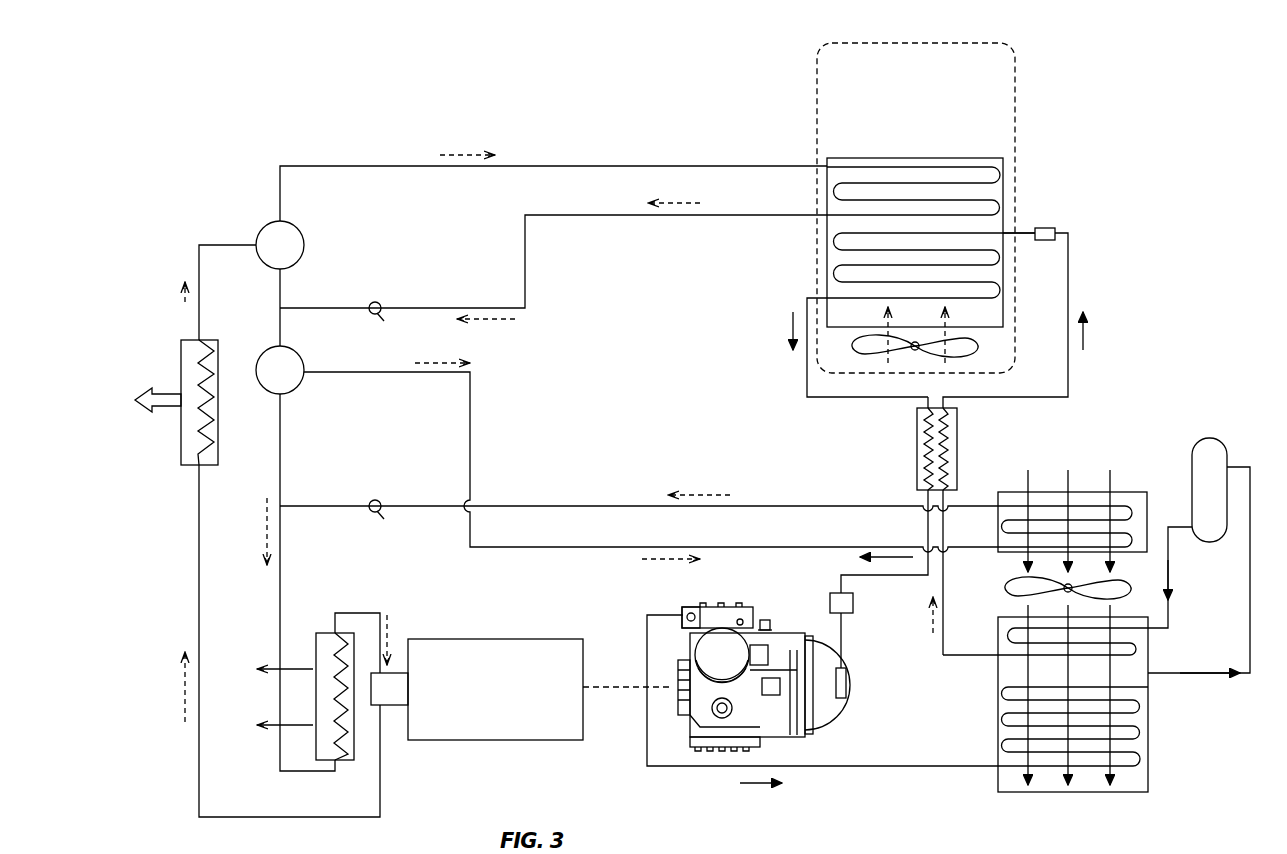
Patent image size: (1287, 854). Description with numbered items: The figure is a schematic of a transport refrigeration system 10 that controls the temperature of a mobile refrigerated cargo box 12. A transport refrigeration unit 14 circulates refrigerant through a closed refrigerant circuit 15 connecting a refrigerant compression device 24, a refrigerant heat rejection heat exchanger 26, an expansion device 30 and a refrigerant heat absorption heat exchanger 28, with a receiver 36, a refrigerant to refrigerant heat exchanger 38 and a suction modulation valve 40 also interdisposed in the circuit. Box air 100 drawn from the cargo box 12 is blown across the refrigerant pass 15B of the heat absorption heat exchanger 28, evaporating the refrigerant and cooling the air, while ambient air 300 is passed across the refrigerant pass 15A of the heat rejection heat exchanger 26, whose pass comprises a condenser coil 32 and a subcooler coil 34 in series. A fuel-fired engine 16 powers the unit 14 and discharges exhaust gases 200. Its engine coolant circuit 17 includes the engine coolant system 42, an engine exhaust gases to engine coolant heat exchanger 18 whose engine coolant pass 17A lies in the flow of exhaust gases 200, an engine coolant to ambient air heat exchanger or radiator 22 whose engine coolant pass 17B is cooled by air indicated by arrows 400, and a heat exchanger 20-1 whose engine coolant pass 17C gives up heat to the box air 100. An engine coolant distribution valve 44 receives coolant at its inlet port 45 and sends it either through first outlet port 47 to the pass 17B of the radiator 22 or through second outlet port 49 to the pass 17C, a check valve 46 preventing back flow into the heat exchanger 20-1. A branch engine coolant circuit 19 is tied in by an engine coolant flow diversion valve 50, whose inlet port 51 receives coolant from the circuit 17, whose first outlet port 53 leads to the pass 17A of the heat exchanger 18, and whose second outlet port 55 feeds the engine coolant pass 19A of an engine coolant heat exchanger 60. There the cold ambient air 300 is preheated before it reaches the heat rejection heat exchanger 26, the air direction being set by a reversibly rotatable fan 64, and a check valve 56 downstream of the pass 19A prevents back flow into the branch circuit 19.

The transport refrigeration system 10 is at (310, 96).
The mobile refrigerated cargo box 12 is at (1015, 85).
The transport refrigeration unit 14 is at (1114, 427).
The refrigerant circuit 15 is at (806, 378).
The refrigerant pass 15A is at (1035, 710).
The refrigerant pass 15B is at (842, 273).
The fuel-fired engine 16 is at (510, 639).
The engine coolant circuit 17 is at (365, 166).
The engine coolant pass 17A is at (206, 455).
The engine coolant pass 17B is at (335, 688).
The engine coolant pass 17C is at (920, 182).
The engine exhaust gases to engine coolant heat exchanger 18 is at (212, 345).
The branch engine coolant circuit 19 is at (615, 547).
The engine coolant pass 19A is at (1087, 505).
The heat exchanger 20-1 is at (995, 176).
The engine coolant to ambient air heat exchanger 22 is at (316, 655).
The refrigerant compression device 24 is at (805, 735).
The refrigerant heat rejection heat exchanger 26 is at (1150, 700).
The refrigerant heat absorption heat exchanger 28 is at (1003, 265).
The expansion device 30 is at (1047, 228).
The condenser coil 32 is at (1087, 772).
The subcooler coil 34 is at (1143, 652).
The receiver 36 is at (1213, 440).
The refrigerant to refrigerant heat exchanger 38 is at (917, 440).
The suction modulation valve 40 is at (830, 598).
The engine coolant system 42 is at (392, 706).
The engine coolant distribution valve 44 is at (305, 242).
The inlet port 45 is at (257, 240).
The check valve 46 is at (371, 302).
The first outlet port 47 is at (292, 266).
The second outlet port 49 is at (285, 222).
The engine coolant flow diversion valve 50 is at (266, 392).
The inlet port 51 is at (287, 349).
The first outlet port 53 is at (292, 391).
The second outlet port 55 is at (304, 370).
The check valve 56 is at (371, 501).
The engine coolant heat exchanger 60 is at (1127, 492).
The reversibly rotatable fan 64 is at (1005, 588).
The air 100 is at (888, 362).
The exhaust gases 200 is at (168, 408).
The ambient air 300 is at (1027, 478).
The airflow 400 is at (307, 727).